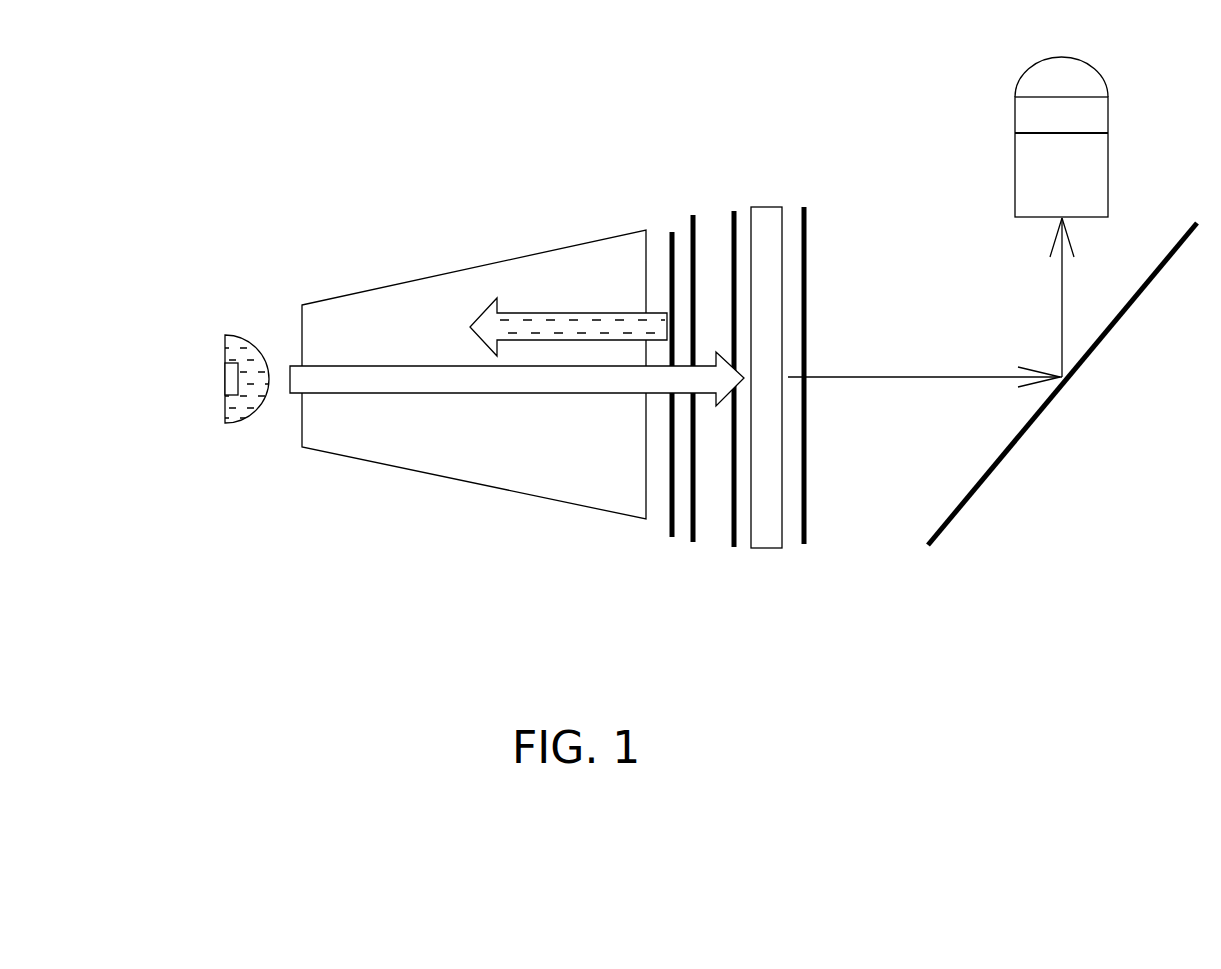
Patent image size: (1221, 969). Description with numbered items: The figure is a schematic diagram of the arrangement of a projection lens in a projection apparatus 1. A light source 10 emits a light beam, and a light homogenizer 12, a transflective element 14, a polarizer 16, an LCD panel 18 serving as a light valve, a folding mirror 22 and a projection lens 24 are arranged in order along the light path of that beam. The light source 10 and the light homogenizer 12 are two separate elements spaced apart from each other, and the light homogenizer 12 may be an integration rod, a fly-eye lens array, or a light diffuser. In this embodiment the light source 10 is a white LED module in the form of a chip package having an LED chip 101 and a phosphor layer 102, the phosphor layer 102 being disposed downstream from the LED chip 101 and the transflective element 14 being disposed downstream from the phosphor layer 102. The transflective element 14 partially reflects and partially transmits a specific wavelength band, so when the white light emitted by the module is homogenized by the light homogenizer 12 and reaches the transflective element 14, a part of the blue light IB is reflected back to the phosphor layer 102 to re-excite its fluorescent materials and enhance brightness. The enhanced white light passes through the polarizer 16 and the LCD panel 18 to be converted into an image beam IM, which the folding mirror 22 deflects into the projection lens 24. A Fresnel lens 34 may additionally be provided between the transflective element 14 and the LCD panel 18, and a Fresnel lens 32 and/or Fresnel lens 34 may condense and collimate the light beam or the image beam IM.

The projection apparatus 1 is at (340, 88).
The light source 10 is at (213, 338).
The LED chip 101 is at (232, 378).
The phosphor layer 102 is at (255, 363).
The light homogenizer 12 is at (442, 478).
The transflective element 14 is at (670, 250).
The polarizer 16 is at (733, 220).
The LCD panel (light valve) 18 is at (768, 207).
The folding mirror 22 is at (1023, 435).
The projection lens 24 is at (1015, 145).
The Fresnel lens 32 is at (806, 498).
The Fresnel lens 34 is at (690, 507).
The blue light IB is at (578, 322).
The image beam IM is at (931, 302).